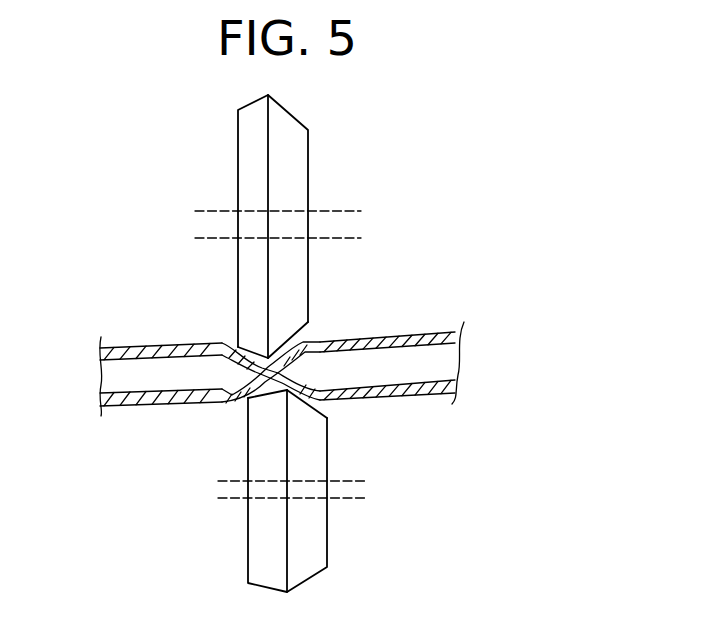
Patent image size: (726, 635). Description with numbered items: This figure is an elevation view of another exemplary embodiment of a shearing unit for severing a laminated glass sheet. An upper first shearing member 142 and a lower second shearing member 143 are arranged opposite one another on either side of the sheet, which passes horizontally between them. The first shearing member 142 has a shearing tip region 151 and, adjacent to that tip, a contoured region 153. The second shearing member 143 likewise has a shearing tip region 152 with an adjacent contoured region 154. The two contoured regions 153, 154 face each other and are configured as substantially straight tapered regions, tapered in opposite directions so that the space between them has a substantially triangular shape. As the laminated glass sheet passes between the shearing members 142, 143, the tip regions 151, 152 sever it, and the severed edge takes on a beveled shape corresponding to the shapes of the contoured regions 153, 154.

The first shearing member 142 is at (309, 158).
The lower pressing member (second prism) 143 is at (248, 423).
The shearing tip region 151 is at (252, 350).
The shearing tip region 152 is at (286, 400).
The contoured region 153 is at (289, 338).
The contoured region 154 is at (307, 412).